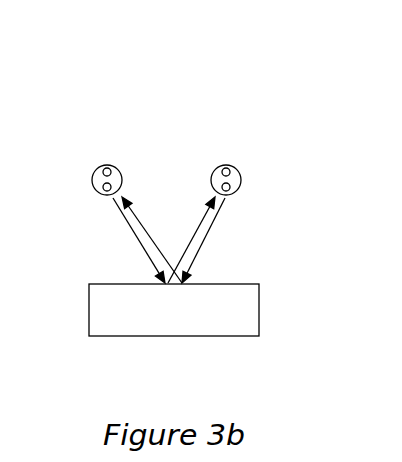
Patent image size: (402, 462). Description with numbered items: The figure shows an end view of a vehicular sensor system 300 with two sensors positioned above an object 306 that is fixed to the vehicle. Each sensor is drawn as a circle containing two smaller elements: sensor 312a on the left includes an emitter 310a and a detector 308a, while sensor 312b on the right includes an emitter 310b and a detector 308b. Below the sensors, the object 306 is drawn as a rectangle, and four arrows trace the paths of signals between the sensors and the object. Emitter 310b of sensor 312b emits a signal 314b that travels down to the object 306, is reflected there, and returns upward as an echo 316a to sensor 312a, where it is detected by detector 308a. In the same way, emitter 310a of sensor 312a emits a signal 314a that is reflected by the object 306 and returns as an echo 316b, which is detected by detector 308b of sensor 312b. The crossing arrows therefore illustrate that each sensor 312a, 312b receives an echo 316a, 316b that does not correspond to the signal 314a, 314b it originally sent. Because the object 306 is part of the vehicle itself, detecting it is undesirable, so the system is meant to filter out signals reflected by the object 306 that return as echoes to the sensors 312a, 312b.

The vehicular sensor system 300 is at (309, 108).
The object 306 is at (174, 341).
The sensor 312a is at (107, 164).
The sensor 312b is at (227, 164).
The emitter 310a is at (93, 174).
The emitter 310b is at (242, 174).
The detector 308a is at (93, 190).
The detector 308b is at (242, 189).
The signal 314a is at (120, 215).
The signal 314b is at (213, 225).
The echo 316a is at (141, 218).
The echo 316b is at (199, 220).